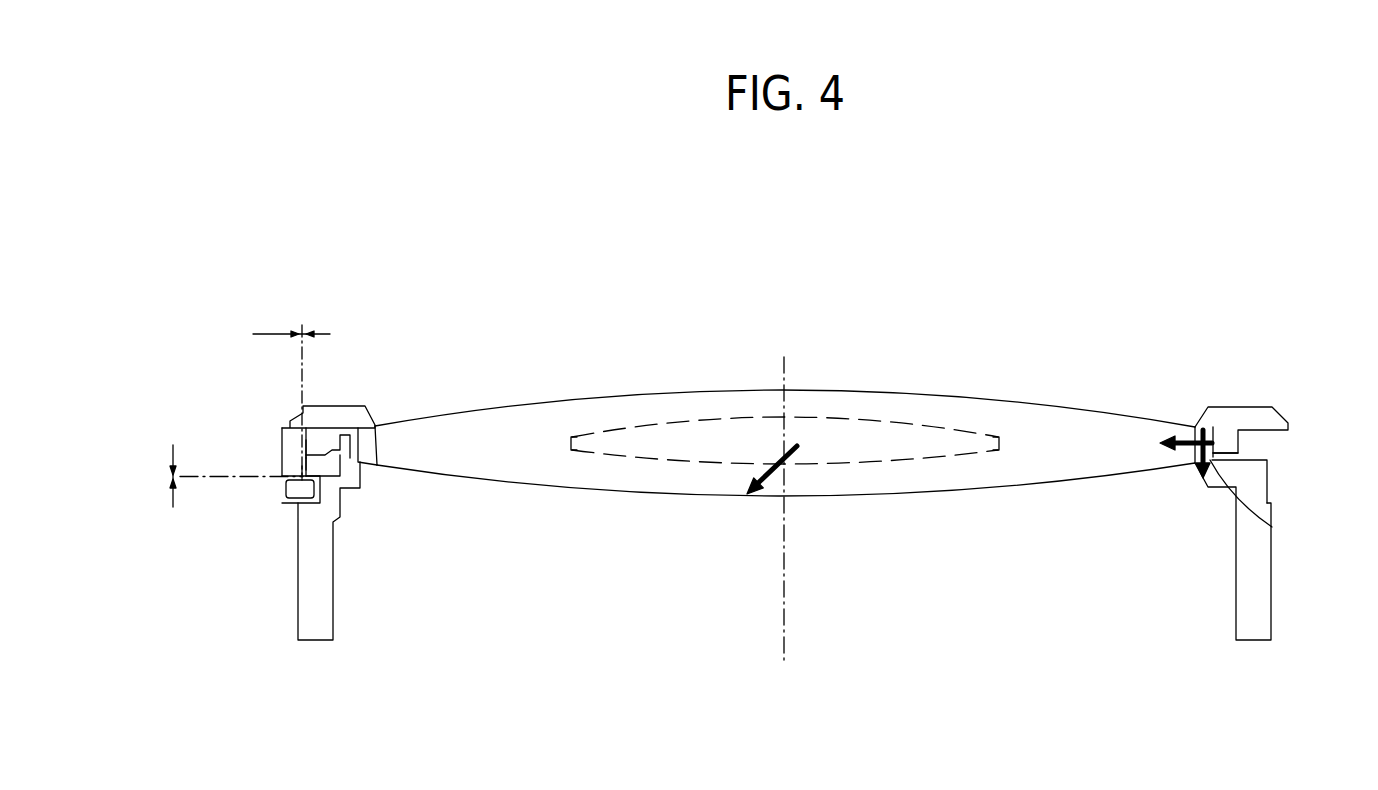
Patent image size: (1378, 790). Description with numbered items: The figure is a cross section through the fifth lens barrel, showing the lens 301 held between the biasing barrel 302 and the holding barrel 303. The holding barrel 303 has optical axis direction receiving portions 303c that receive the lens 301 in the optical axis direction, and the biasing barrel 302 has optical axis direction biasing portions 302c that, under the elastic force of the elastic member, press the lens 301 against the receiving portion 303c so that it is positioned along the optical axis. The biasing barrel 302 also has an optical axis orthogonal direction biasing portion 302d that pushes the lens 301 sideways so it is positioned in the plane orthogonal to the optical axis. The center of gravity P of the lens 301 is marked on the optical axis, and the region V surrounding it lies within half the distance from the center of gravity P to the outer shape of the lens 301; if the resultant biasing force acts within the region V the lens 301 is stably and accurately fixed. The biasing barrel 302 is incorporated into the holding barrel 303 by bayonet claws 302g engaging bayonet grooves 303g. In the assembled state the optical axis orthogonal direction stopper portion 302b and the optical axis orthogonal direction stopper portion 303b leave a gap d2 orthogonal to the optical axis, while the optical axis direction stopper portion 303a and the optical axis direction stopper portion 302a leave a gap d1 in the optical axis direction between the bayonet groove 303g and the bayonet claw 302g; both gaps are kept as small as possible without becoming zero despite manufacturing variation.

The lens 301 is at (580, 413).
The biasing barrel 302 is at (345, 412).
The optical axis direction stopper portion 302a is at (308, 492).
The optical axis orthogonal direction stopper portion 302b is at (300, 473).
The optical axis direction biasing portion 302c is at (1203, 427).
The optical axis orthogonal direction biasing portion 302d is at (1215, 453).
The bayonet claw 302g is at (307, 507).
The holding barrel 303 is at (322, 559).
The optical axis direction stopper portion 303a is at (302, 458).
The optical axis orthogonal direction stopper portion 303b is at (300, 467).
The optical axis direction receiving portion 303c is at (1272, 527).
The bayonet groove 303g is at (318, 468).
The center of gravity P is at (787, 444).
The region V is at (840, 450).
The gap d1 is at (222, 479).
The gap d2 is at (289, 393).